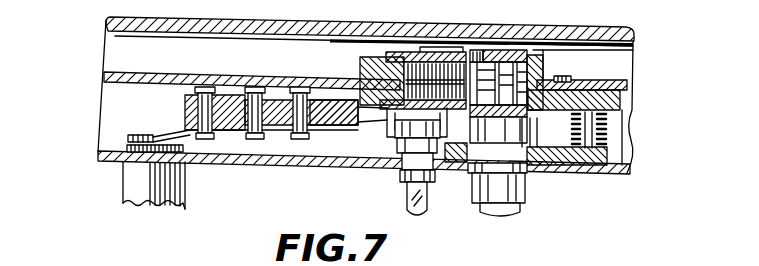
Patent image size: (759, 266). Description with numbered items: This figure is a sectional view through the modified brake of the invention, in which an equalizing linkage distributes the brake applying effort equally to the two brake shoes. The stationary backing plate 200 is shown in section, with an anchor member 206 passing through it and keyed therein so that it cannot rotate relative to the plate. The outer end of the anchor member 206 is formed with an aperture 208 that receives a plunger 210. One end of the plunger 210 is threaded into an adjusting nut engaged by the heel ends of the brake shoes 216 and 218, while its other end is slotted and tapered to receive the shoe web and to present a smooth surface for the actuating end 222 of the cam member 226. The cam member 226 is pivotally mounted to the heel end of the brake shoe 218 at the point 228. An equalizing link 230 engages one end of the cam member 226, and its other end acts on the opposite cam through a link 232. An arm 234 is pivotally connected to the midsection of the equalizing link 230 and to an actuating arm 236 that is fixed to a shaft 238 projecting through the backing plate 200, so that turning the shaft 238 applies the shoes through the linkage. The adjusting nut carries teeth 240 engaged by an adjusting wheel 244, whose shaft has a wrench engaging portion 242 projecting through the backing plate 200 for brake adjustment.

The backing plate 200 is at (247, 165).
The anchor member 206 is at (534, 133).
The aperture 208 is at (508, 50).
The plunger 210 is at (543, 63).
The brake shoe 216 is at (125, 72).
The brake shoe 218 is at (610, 83).
The actuating end 222 is at (499, 0).
The cam member 226 is at (333, 118).
The pivot point 228 is at (563, 77).
The equalizing link 230 is at (281, 118).
The link 232 is at (185, 107).
The arm 234 is at (240, 107).
The actuating arm 236 is at (143, 135).
The shaft 238 is at (138, 185).
The teeth 240 is at (386, 50).
The wrench engaging portion 242 is at (407, 200).
The adjusting wheel 244 is at (387, 128).